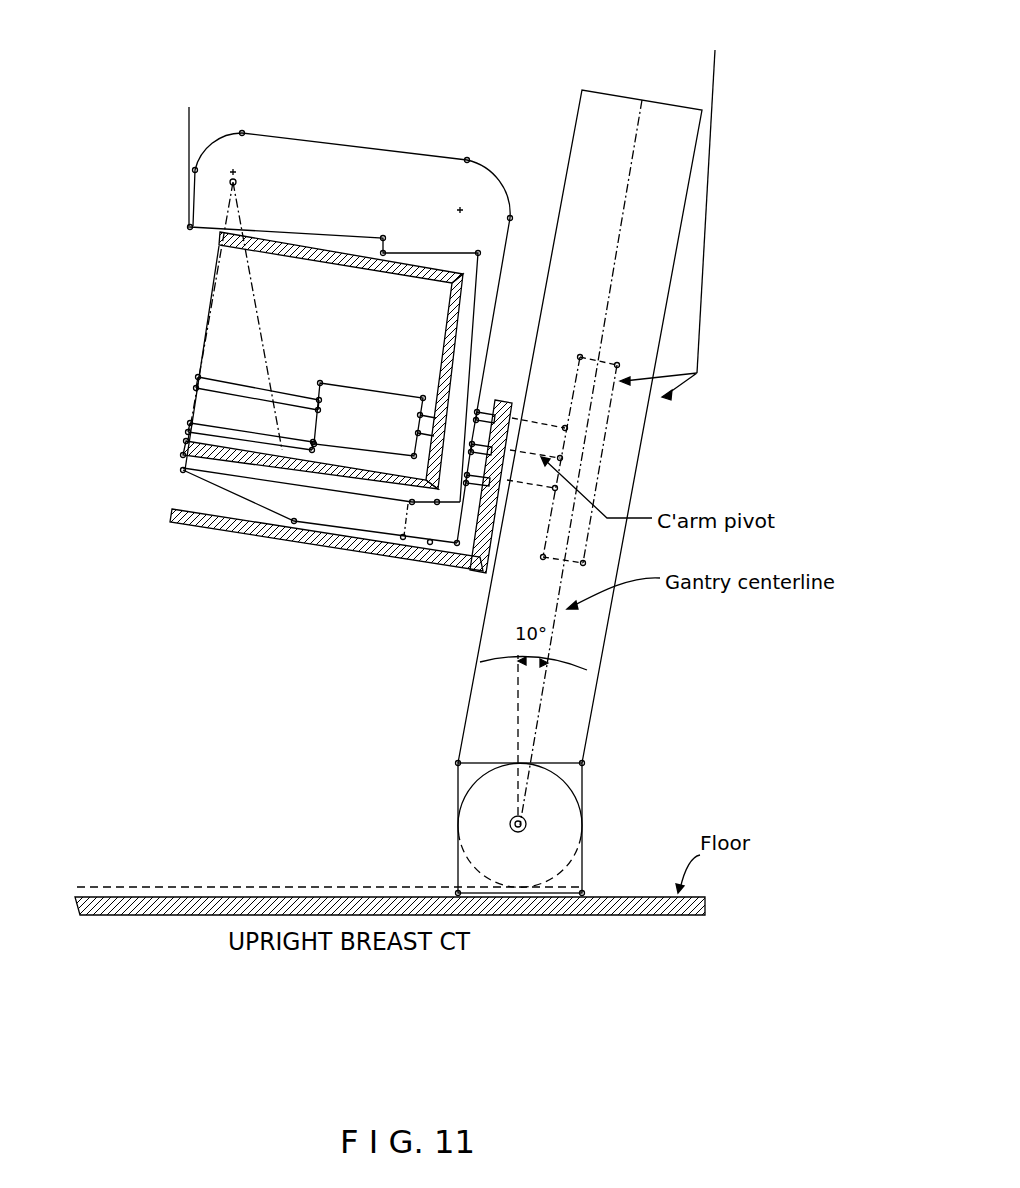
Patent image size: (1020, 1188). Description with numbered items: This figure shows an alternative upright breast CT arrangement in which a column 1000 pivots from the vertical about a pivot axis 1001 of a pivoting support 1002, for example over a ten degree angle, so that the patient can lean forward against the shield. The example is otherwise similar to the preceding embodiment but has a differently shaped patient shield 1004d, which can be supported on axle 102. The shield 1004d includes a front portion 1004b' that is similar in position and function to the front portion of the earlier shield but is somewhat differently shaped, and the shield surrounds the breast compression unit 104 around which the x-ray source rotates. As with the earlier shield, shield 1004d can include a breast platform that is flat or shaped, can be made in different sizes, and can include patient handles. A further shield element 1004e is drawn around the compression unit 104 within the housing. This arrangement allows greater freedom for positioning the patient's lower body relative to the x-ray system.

The column 1000 is at (623, 477).
The pivot axis 1001 is at (538, 823).
The pivoting support 1002 is at (568, 838).
The axle 102 is at (493, 400).
The detector housing 1004e is at (203, 283).
The front portion 1004b' is at (266, 492).
The patient shield 1004d is at (400, 560).
The breast compression unit 104 is at (170, 395).